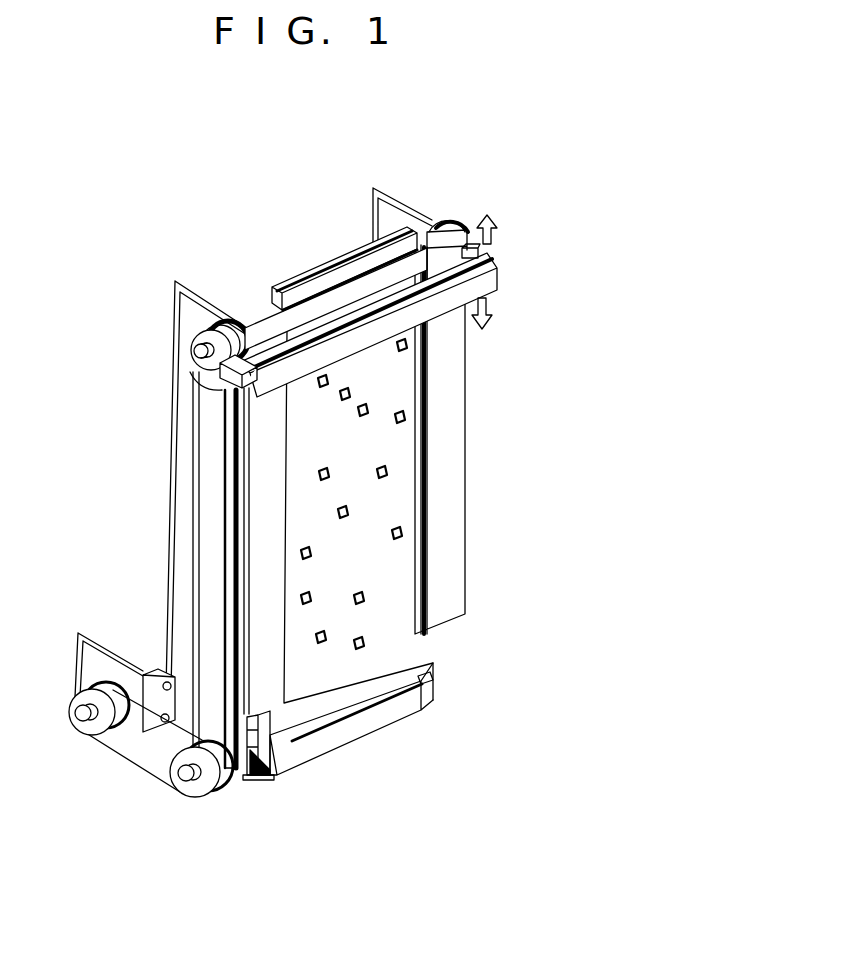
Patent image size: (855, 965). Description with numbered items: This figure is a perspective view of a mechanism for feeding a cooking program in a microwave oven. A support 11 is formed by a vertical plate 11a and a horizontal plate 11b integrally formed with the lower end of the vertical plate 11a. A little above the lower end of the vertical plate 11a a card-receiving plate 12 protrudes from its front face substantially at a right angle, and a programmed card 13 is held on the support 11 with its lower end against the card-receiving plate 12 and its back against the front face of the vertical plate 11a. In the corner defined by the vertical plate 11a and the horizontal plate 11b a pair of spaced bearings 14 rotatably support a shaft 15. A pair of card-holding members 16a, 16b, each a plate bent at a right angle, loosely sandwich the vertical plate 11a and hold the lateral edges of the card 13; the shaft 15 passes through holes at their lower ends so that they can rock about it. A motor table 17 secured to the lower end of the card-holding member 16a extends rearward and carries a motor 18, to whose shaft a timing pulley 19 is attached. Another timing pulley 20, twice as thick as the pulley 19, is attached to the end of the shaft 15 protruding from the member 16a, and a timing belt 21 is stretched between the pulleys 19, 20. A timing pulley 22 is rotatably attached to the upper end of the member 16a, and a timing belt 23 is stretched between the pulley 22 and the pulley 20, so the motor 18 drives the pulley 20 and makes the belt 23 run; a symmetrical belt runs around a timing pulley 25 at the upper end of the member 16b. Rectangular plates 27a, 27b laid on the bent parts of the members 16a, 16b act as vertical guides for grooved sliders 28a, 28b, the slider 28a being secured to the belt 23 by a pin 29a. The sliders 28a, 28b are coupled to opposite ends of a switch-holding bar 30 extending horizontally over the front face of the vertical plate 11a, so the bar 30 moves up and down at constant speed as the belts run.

The support 11 is at (357, 740).
The vertical plate 11a is at (357, 264).
The horizontal plate 11b is at (263, 772).
The card-receiving plate 12 is at (424, 681).
The programmed card 13 is at (300, 290).
The bearings 14 is at (268, 758).
The shaft 15 is at (250, 768).
The card-holding member 16a is at (207, 297).
The card-holding member 16b is at (405, 203).
The motor table 17 is at (84, 670).
The motor 18 is at (148, 652).
The timing pulley 19 is at (84, 732).
The timing pulley 20 is at (184, 794).
The timing belt 21 is at (135, 756).
The timing pulley 22 is at (190, 348).
The timing belt 23 is at (190, 526).
The timing pulley 25 is at (452, 212).
The rectangular plate 27a is at (276, 681).
The rectangular plate 27b is at (452, 580).
The slider 28a is at (248, 400).
The slider 28b is at (482, 250).
The pin 29a is at (216, 392).
The switch-holding bar 30 is at (442, 298).